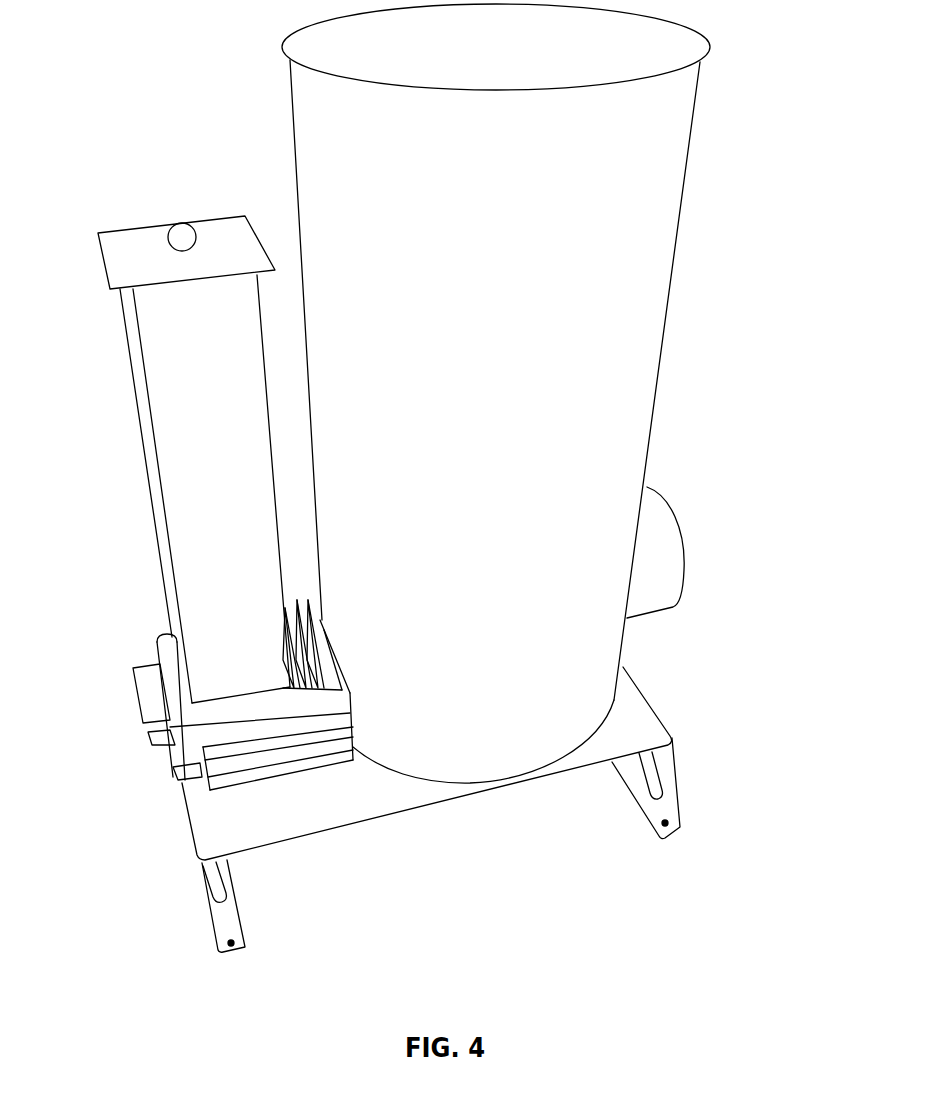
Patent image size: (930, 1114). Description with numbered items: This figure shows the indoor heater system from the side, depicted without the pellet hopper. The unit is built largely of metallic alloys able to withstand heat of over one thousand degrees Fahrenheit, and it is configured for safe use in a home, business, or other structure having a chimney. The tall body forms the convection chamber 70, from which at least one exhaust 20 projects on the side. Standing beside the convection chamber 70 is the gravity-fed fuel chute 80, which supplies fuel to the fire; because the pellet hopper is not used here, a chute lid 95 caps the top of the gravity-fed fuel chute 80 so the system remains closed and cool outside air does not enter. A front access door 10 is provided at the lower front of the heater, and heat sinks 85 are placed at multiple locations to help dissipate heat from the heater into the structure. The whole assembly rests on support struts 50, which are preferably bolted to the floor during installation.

The front access door 10 is at (163, 737).
The exhaust 20 is at (662, 555).
The support struts 50 is at (225, 922).
The convection chamber 70 is at (602, 283).
The gravity-fed fuel chute 80 is at (173, 397).
The heat sinks 85 is at (267, 748).
The chute lid 95 is at (142, 247).